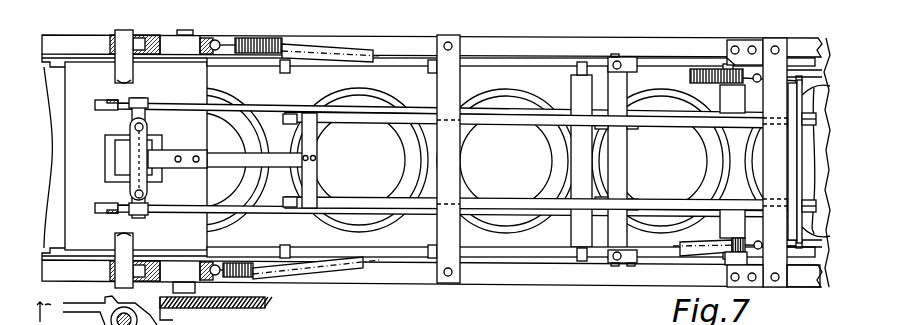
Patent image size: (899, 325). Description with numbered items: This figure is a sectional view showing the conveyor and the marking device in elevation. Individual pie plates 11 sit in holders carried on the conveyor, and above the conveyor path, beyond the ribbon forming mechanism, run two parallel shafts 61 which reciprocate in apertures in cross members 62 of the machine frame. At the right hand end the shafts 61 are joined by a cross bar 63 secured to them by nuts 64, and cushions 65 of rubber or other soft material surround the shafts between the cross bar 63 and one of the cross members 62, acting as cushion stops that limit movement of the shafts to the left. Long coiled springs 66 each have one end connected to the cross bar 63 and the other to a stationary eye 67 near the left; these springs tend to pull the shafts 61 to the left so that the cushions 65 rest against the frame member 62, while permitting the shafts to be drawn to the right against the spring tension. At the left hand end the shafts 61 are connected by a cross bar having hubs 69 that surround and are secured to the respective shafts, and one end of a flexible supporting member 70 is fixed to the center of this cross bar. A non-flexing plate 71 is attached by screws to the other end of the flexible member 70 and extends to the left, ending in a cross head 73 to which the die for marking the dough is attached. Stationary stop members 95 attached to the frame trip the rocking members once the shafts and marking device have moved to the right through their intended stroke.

The pie plate 11 is at (452, 160).
The parallel shafts 61 is at (491, 193).
The cross members 62 is at (452, 65).
The cross bar 63 is at (792, 158).
The nuts 64 is at (811, 200).
The cushions 65 is at (791, 191).
The coiled springs 66 is at (275, 42).
The stationary eye 67 is at (218, 42).
The hubs 69 is at (326, 149).
The flexible supporting member 70 is at (228, 168).
The plate 71 is at (168, 157).
The cross head 73 is at (133, 131).
The stationary stop members 95 is at (758, 262).